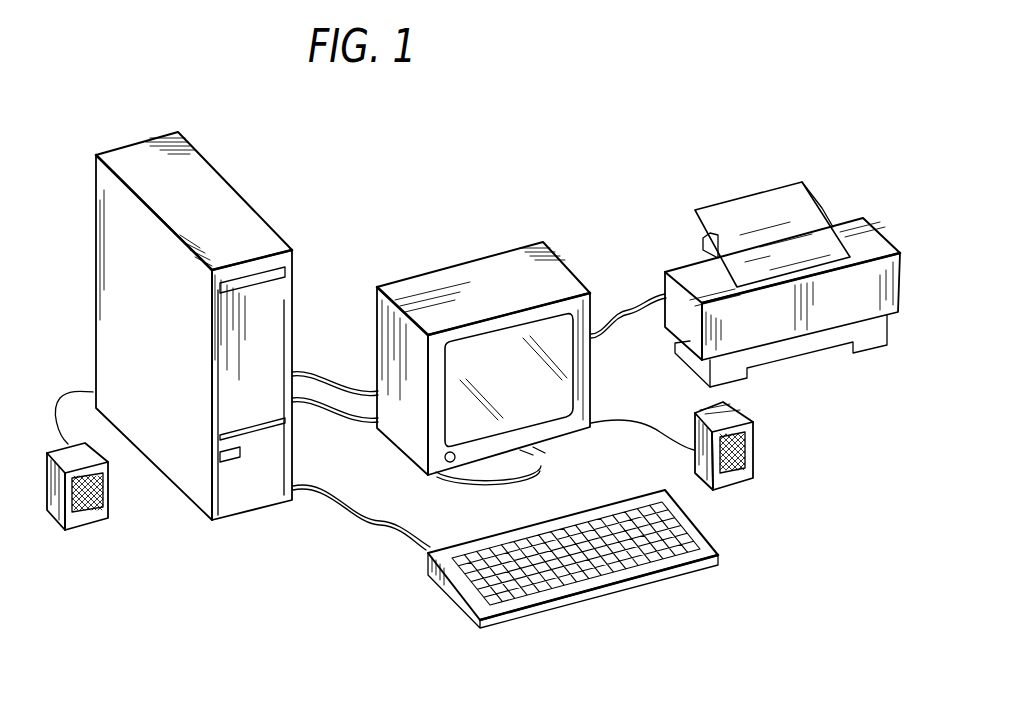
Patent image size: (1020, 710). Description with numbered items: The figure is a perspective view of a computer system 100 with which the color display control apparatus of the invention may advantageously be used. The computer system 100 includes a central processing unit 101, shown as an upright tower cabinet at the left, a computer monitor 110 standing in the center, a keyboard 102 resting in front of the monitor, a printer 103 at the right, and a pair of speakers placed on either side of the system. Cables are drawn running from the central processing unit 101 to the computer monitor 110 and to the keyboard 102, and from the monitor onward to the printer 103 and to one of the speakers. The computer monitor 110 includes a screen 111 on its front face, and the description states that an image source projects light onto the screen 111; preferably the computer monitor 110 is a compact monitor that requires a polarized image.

The computer system 100 is at (575, 162).
The central processing unit 101 is at (157, 137).
The keyboard 102 is at (608, 583).
The printer 103 is at (866, 219).
The computer monitor 110 is at (475, 268).
The screen 111 is at (524, 391).